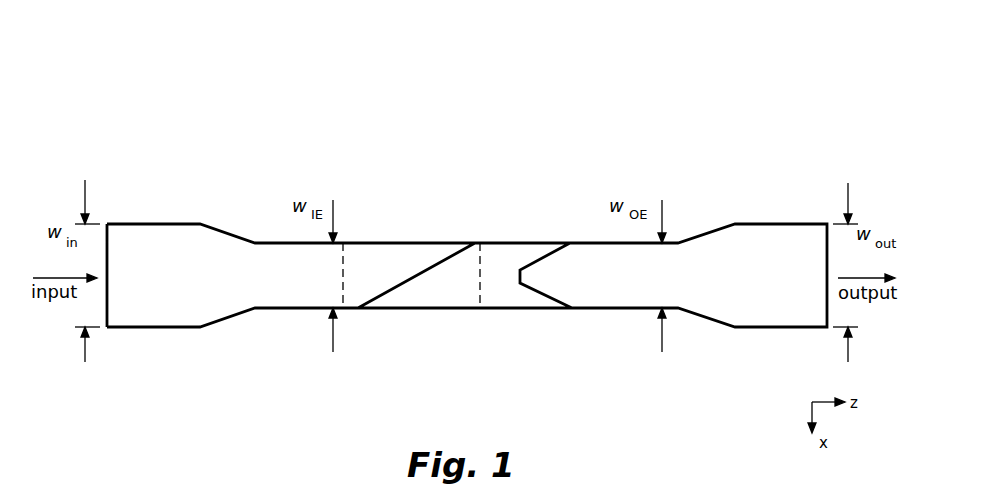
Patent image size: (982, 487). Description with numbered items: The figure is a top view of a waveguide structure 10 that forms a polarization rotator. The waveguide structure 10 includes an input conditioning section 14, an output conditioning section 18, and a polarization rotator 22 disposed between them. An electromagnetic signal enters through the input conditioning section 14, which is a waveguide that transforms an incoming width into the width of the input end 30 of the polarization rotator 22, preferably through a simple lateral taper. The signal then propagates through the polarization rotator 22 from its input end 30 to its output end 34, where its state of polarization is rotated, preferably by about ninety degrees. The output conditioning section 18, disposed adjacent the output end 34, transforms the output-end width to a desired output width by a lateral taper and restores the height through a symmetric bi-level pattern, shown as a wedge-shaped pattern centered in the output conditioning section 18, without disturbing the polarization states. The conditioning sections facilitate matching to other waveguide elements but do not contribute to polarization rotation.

The waveguide structure 10 is at (590, 85).
The input conditioning section 14 is at (340, 170).
The polarization rotator 22 is at (477, 170).
The output conditioning section 18 is at (823, 170).
The input end 30 is at (343, 277).
The output end 34 is at (480, 277).